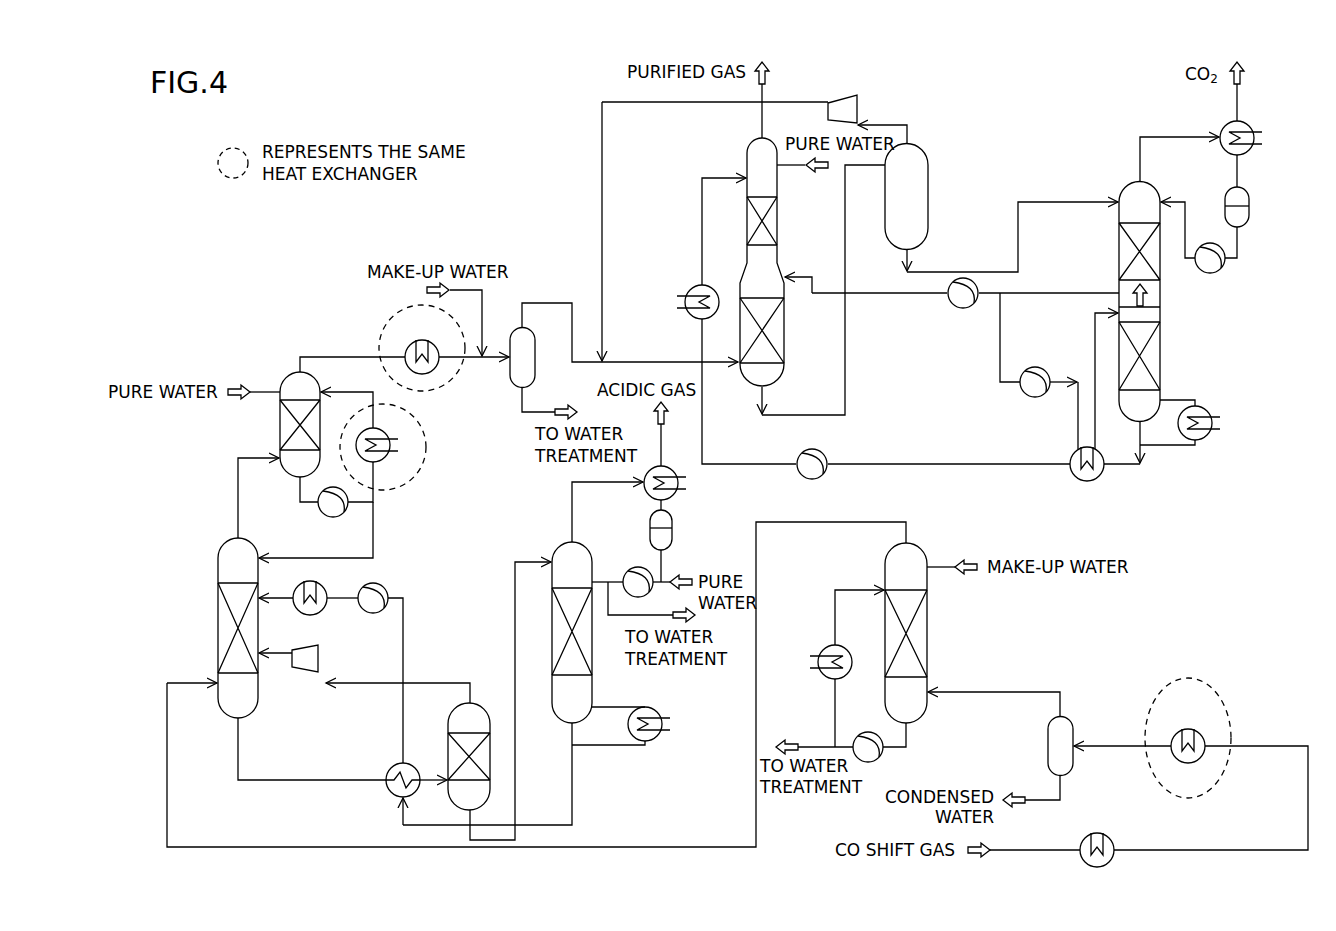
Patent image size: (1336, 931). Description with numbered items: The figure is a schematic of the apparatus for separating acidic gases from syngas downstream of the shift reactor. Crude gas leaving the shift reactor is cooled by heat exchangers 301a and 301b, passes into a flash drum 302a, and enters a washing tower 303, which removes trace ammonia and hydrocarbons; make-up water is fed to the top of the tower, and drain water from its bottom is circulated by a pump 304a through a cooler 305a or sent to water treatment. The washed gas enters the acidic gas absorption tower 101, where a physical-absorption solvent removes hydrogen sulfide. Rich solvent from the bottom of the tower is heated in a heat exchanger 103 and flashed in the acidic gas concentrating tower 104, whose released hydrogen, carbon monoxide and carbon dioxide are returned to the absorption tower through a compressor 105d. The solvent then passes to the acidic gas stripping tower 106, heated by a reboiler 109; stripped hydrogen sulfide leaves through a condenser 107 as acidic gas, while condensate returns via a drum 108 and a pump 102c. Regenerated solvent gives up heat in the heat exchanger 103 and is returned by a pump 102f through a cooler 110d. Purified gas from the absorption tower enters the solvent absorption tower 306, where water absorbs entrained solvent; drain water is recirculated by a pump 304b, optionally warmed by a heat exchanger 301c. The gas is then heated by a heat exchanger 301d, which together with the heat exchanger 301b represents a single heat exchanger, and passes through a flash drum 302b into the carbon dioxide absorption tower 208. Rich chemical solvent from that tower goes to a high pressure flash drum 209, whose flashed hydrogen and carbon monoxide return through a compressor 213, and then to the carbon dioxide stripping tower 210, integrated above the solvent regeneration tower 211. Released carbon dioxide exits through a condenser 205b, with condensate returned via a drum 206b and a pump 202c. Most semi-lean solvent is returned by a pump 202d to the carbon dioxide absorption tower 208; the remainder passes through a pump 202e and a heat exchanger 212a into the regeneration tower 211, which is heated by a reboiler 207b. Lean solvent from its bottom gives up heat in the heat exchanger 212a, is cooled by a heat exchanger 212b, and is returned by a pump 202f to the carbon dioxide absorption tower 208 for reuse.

The acidic gas absorption tower 101 is at (218, 600).
The pump 102c is at (628, 567).
The pump 102f is at (386, 584).
The heat exchanger 103 is at (391, 767).
The acidic gas concentrating tower 104 is at (490, 704).
The compressor 105d is at (301, 674).
The acidic gas stripping tower 106 is at (556, 546).
The condenser 107 is at (679, 489).
The drum 108 is at (673, 542).
The reboiler 109 is at (650, 742).
The cooler 110d is at (322, 614).
The pump 202c is at (1222, 268).
The pump 202d is at (965, 310).
The pump 202e is at (1033, 367).
The pump 202f is at (826, 452).
The condenser 205b is at (1245, 122).
The drum 206b is at (1225, 197).
The reboiler 207b is at (1205, 406).
The CO2 absorption tower 208 is at (779, 184).
The high pressure flash drum 209 is at (928, 150).
The CO2 stripping tower 210 is at (1119, 248).
The solvent regeneration tower 211 is at (1163, 331).
The heat exchanger 212a is at (1077, 482).
The heat exchanger 212b is at (692, 287).
The compressor 213 is at (860, 104).
The heat exchanger 301a is at (1112, 843).
The heat exchanger 301b is at (1200, 736).
The heat exchanger 301c is at (388, 462).
The heat exchanger 301d is at (405, 345).
The flash drum 302a is at (1048, 736).
The flash drum 302b is at (509, 382).
The washing tower 303 is at (928, 620).
The pump 304a is at (882, 758).
The pump 304b is at (320, 513).
The cooler 305a is at (823, 647).
The solvent absorption tower 306 is at (281, 372).